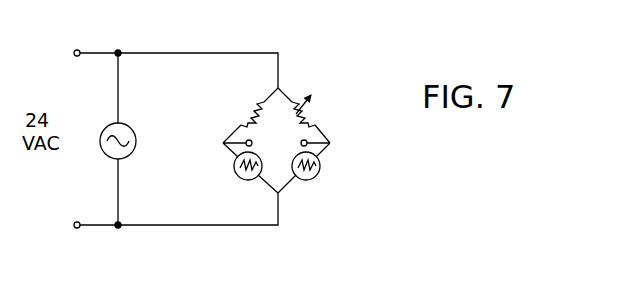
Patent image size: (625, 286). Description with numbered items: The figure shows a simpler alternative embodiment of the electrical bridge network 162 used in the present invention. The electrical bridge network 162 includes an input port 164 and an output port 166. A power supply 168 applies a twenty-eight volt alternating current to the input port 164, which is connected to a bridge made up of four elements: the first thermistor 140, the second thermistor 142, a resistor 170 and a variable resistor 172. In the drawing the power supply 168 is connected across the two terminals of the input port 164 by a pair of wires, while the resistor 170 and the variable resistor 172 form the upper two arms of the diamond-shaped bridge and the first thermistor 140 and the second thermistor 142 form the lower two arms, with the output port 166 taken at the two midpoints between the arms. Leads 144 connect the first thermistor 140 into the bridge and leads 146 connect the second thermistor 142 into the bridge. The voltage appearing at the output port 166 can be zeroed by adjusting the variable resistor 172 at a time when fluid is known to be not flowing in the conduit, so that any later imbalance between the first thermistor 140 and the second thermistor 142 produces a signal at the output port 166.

The electrical bridge network 162 is at (289, 62).
The input port 164 is at (76, 50).
The output port 166 is at (276, 153).
The power supply 168 is at (101, 152).
The resistor 170 is at (257, 101).
The variable resistor 172 is at (316, 121).
The first thermistor 140 is at (236, 171).
The second thermistor 142 is at (320, 171).
The first sensor leads 144 is at (227, 146).
The second sensor leads 146 is at (334, 146).